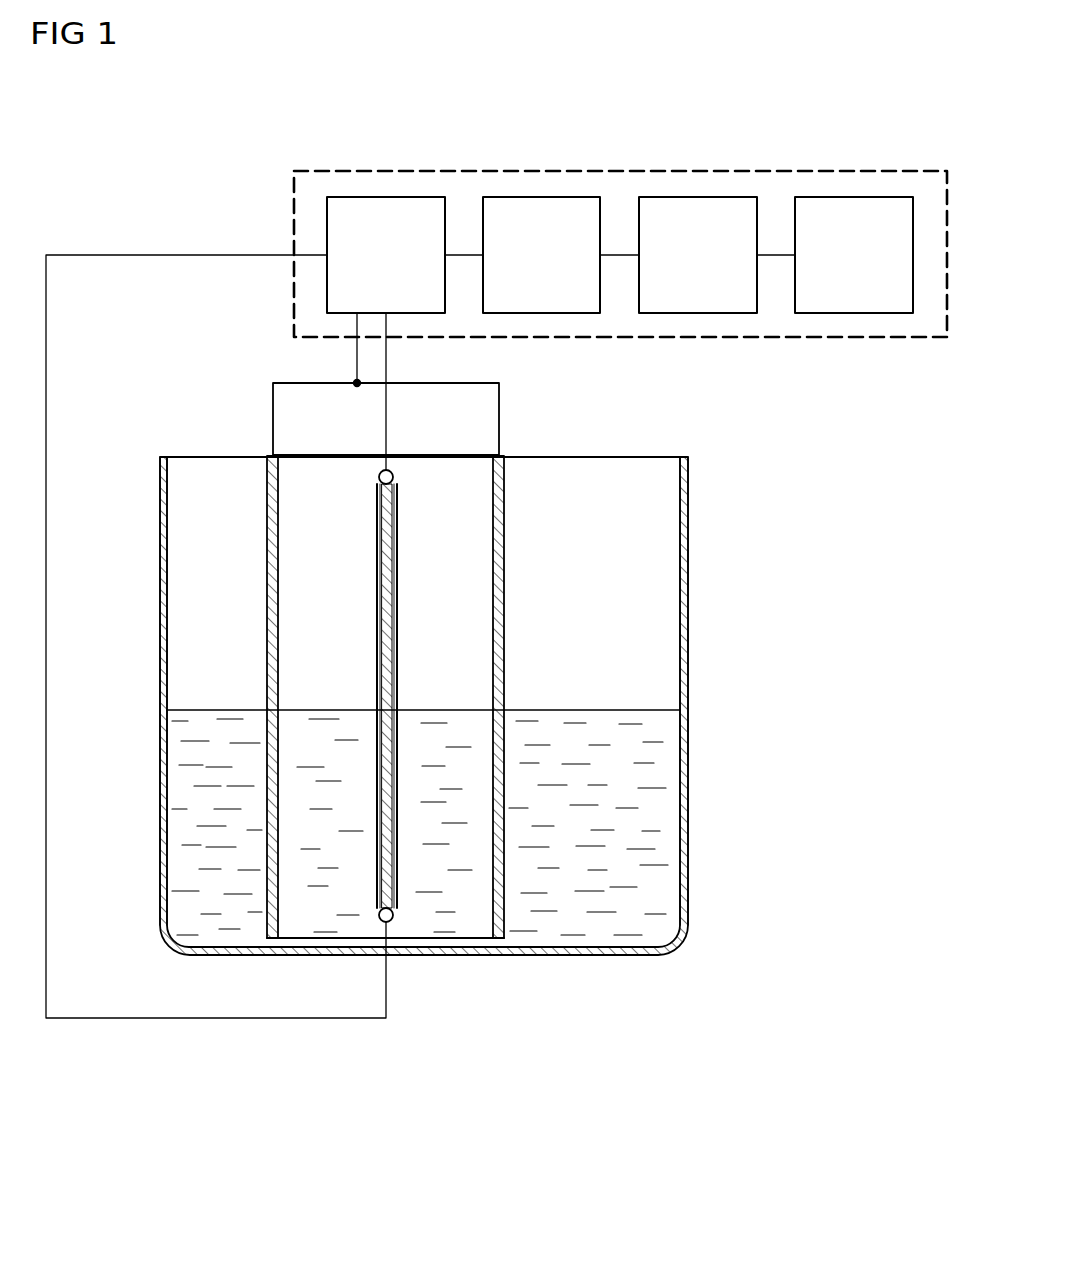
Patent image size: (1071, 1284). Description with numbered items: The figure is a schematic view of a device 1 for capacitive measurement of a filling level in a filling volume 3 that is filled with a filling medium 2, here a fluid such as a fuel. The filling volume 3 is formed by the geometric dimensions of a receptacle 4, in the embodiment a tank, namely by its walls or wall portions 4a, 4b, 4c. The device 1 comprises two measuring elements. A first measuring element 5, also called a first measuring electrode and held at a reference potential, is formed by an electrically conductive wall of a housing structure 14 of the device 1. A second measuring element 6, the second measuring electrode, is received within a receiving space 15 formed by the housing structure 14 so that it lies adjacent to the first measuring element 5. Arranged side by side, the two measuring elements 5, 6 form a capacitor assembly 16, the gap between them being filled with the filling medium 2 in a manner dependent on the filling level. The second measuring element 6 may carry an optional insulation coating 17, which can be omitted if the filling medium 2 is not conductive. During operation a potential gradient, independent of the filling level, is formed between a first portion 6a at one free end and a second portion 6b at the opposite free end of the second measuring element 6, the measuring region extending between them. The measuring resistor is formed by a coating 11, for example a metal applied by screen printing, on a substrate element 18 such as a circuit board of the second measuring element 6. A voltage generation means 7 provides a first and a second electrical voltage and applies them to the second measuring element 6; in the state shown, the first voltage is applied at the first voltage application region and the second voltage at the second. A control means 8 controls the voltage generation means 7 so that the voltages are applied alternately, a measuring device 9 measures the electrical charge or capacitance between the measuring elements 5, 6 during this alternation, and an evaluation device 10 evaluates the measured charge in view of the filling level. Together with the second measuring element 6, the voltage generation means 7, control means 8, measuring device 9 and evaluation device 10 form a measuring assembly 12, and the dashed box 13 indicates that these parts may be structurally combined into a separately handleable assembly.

The device 1 is at (778, 1027).
The filling medium 2 is at (195, 775).
The filling volume 3 is at (600, 640).
The receptacle 4 is at (742, 747).
The wall portion 4a is at (160, 618).
The wall portion 4b is at (690, 596).
The wall portion 4c is at (583, 956).
The first measuring element 5 is at (266, 637).
The second measuring element 6 is at (418, 669).
The first portion 6a is at (392, 470).
The second portion 6b is at (390, 922).
The voltage generation means 7 is at (381, 197).
The control means 8 is at (545, 197).
The measuring device 9 is at (704, 197).
The evaluation device 10 is at (861, 197).
The coating 11 is at (383, 655).
The measuring assembly 12 is at (818, 383).
The box 13 is at (617, 171).
The housing structure 14 is at (512, 503).
The receiving space 15 is at (442, 490).
The capacitor assembly 16 is at (517, 563).
The insulation coating 17 is at (372, 582).
The substrate element 18 is at (391, 615).